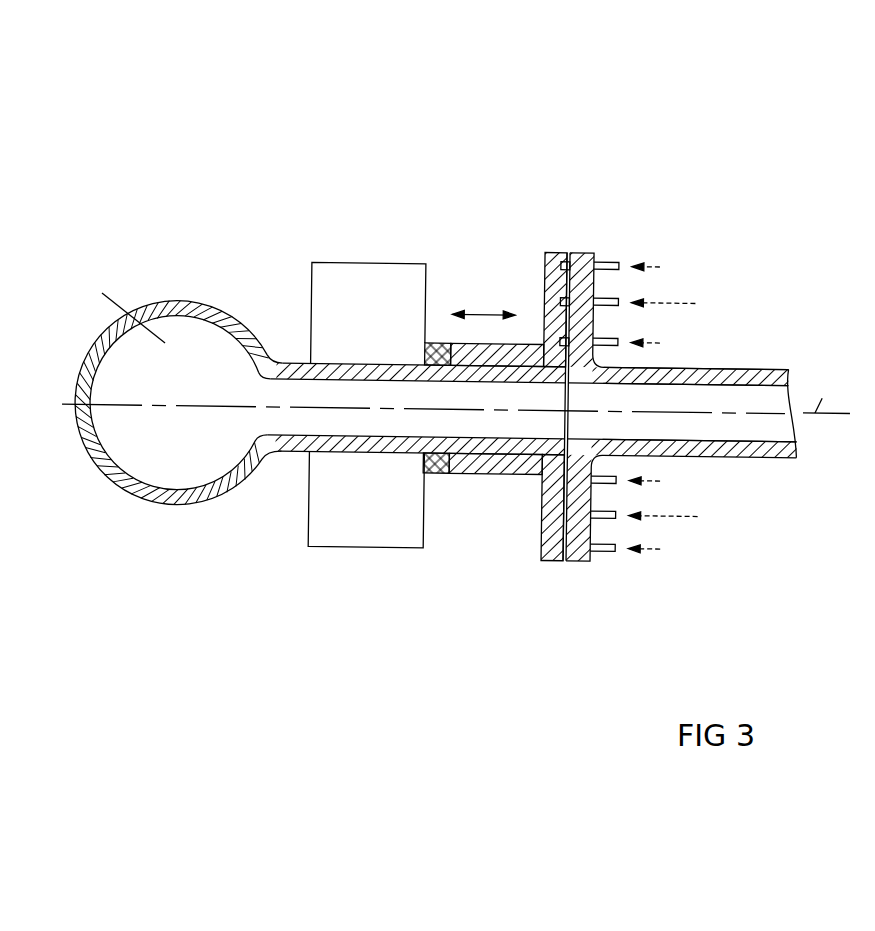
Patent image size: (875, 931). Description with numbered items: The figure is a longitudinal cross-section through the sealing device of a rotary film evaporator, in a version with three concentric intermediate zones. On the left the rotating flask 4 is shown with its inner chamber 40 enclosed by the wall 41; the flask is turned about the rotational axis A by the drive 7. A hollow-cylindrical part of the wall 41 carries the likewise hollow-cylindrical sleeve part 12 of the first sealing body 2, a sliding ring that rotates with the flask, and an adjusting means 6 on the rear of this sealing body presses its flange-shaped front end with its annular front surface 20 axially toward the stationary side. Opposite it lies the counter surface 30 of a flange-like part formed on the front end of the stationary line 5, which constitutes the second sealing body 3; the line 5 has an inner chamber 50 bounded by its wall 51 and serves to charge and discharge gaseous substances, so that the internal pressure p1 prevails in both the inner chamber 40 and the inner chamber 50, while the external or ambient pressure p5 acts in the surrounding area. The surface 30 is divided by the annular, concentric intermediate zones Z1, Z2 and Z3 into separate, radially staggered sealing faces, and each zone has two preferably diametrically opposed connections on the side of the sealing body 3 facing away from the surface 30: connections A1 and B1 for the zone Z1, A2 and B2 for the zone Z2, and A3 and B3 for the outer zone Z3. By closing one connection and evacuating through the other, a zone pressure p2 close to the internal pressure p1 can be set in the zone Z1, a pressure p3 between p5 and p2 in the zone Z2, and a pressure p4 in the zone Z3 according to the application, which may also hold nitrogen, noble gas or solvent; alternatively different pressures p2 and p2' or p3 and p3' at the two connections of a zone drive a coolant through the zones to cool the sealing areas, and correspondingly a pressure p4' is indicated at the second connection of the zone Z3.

The first sealing body 2 is at (543, 280).
The second sealing body 3 is at (594, 563).
The rotating flask 4 is at (227, 321).
The line 5 is at (796, 450).
The adjusting means 6 is at (439, 474).
The drive 7 is at (326, 264).
The sleeve part 12 is at (499, 472).
The front surface 20 is at (574, 560).
The surface 30 is at (560, 251).
The inner chamber 40 is at (115, 304).
The wall 41 is at (370, 451).
The inner chamber 50 is at (775, 420).
The wall 51 is at (762, 366).
The rotational axis A is at (827, 383).
The connection A1 is at (594, 341).
The connection A2 is at (606, 302).
The connection A3 is at (615, 264).
The connection B1 is at (598, 482).
The connection B2 is at (598, 516).
The connection B3 is at (600, 550).
The intermediate zone Z1 is at (596, 264).
The intermediate zone Z2 is at (567, 303).
The intermediate zone Z3 is at (569, 340).
The internal pressure p1 is at (428, 409).
The pressure in intermediate zone Z1 p2 is at (668, 343).
The pressure in intermediate zone Z2 p3 is at (685, 302).
The pressure in intermediate zone Z3 p4 is at (668, 267).
The pressure at connection B1 p2' is at (667, 481).
The pressure at connection B2 p3' is at (685, 516).
The pressure p4' is at (666, 549).
The external pressure p5 is at (83, 530).